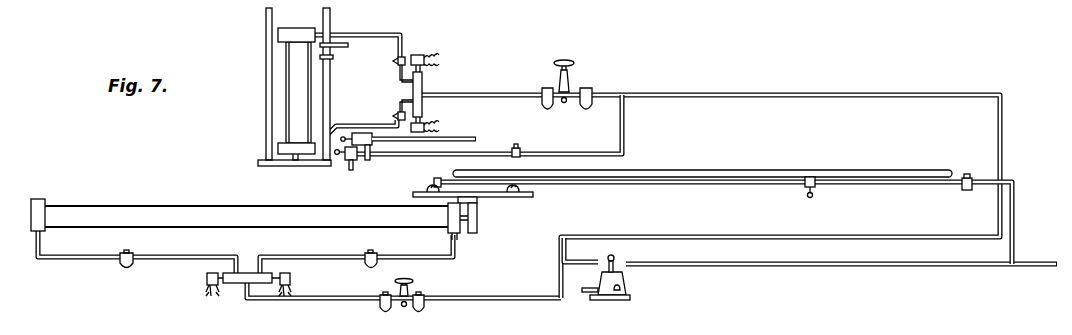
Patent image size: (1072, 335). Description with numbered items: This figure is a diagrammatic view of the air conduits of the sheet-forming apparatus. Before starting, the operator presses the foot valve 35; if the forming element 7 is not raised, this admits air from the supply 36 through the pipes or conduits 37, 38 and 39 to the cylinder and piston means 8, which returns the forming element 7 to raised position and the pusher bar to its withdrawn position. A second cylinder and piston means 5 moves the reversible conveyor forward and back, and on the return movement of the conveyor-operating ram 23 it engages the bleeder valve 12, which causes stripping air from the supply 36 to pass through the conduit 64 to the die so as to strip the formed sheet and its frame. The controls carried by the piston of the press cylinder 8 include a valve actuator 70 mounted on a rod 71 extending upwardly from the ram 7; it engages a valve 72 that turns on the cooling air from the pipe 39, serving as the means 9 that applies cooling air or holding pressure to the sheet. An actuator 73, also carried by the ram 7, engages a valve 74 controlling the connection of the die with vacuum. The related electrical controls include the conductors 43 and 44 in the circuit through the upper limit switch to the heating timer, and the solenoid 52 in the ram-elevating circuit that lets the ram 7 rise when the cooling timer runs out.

The cylinder and piston means 5 is at (185, 212).
The forming element 7 is at (312, 169).
The cylinder and piston means 8 is at (284, 86).
The means for applying cooling air or pressure 9 is at (357, 162).
The bleeder valve 12 is at (813, 197).
The ram 23 is at (472, 223).
The foot valve 35 is at (587, 292).
The supply 36 is at (768, 267).
The pipe or conduit 37 is at (590, 262).
The pipe or conduit 38 is at (478, 297).
The pipe or conduit 39 is at (697, 93).
The conductor 43 is at (792, 334).
The conductor 44 is at (698, 334).
The solenoid 52 is at (291, 281).
The conduit 64 is at (680, 184).
The valve actuator 70 is at (333, 57).
The rod 71 is at (330, 88).
The valve 72 is at (337, 155).
The actuator 73 is at (346, 45).
The valve 74 is at (345, 137).